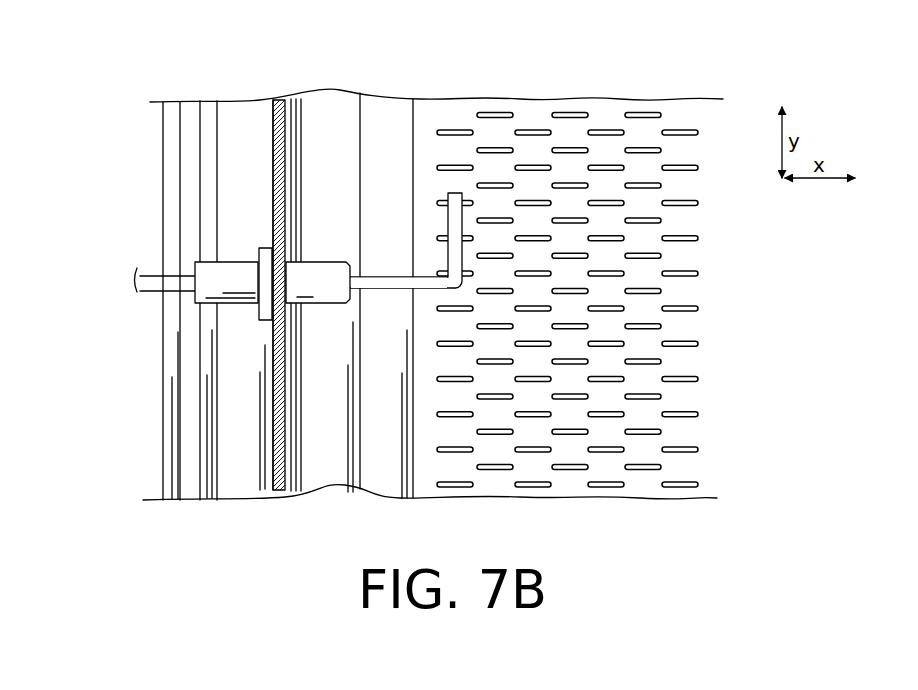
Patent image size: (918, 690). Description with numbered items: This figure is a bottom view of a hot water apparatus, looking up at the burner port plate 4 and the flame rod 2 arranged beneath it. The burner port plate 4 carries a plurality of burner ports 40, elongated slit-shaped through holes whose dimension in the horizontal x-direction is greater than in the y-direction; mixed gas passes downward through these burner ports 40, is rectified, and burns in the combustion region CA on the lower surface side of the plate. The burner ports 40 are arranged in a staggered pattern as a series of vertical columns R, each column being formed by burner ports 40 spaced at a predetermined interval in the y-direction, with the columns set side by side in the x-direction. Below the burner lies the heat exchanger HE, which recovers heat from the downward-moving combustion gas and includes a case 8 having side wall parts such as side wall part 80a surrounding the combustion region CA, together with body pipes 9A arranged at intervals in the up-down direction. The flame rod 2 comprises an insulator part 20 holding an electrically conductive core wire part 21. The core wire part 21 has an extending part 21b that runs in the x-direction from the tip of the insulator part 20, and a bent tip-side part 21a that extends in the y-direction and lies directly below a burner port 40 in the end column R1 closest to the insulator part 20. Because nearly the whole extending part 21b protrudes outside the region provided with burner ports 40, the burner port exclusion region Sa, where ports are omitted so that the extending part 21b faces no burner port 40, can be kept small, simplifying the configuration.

The flame rod 2 is at (272, 278).
The burner port plate 4 is at (698, 113).
The case 8 is at (240, 301).
The side wall part 80a is at (272, 127).
The body pipe 9A is at (323, 102).
The insulator part 20 is at (319, 288).
The core wire part 21 is at (299, 288).
The tip-side part 21a is at (452, 260).
The extending part 21b is at (393, 278).
The burner port 40 is at (445, 240).
The combustion region CA is at (700, 287).
The heat exchanger HE is at (266, 473).
The vertical column R is at (453, 115).
The vertical column at end position R1 is at (456, 32).
The burner port exclusion region Sa is at (453, 305).